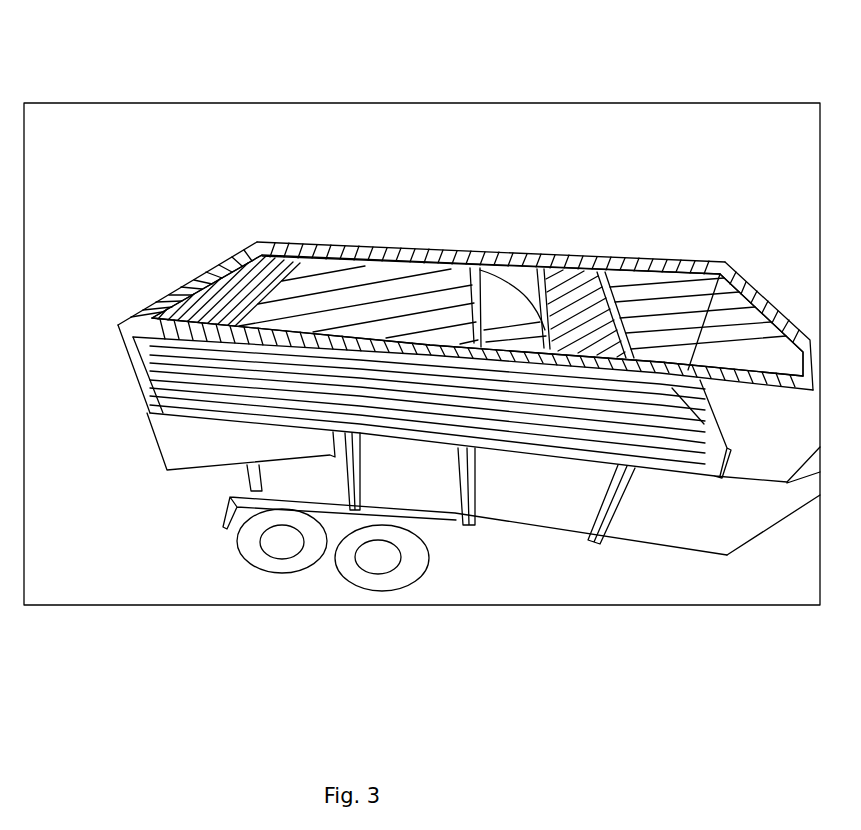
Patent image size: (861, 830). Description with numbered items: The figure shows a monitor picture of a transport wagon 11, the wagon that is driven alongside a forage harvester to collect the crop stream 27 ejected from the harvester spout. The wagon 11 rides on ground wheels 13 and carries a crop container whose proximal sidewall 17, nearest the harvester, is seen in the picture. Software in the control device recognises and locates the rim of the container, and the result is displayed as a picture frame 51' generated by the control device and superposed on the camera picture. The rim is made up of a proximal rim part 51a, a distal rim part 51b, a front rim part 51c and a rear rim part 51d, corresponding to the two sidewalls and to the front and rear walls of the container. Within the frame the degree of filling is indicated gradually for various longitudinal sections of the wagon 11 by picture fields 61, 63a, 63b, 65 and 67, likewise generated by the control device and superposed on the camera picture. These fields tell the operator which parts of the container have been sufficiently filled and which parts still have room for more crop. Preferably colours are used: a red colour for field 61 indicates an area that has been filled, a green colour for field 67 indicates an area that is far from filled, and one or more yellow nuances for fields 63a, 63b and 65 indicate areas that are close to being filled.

The transport wagon 11 is at (555, 505).
The ground wheels 13 is at (363, 585).
The proximal sidewall 17 is at (650, 515).
The crop stream 27 is at (438, 182).
The picture frame 51' is at (699, 210).
The proximal rim part 51a is at (700, 378).
The distal rim part 51b is at (633, 262).
The front rim part 51c is at (763, 297).
The rear rim part 51d is at (183, 290).
The picture field 61 is at (345, 278).
The picture field 63a is at (250, 277).
The picture field 63b is at (520, 313).
The picture field 65 is at (567, 295).
The picture field 67 is at (750, 346).